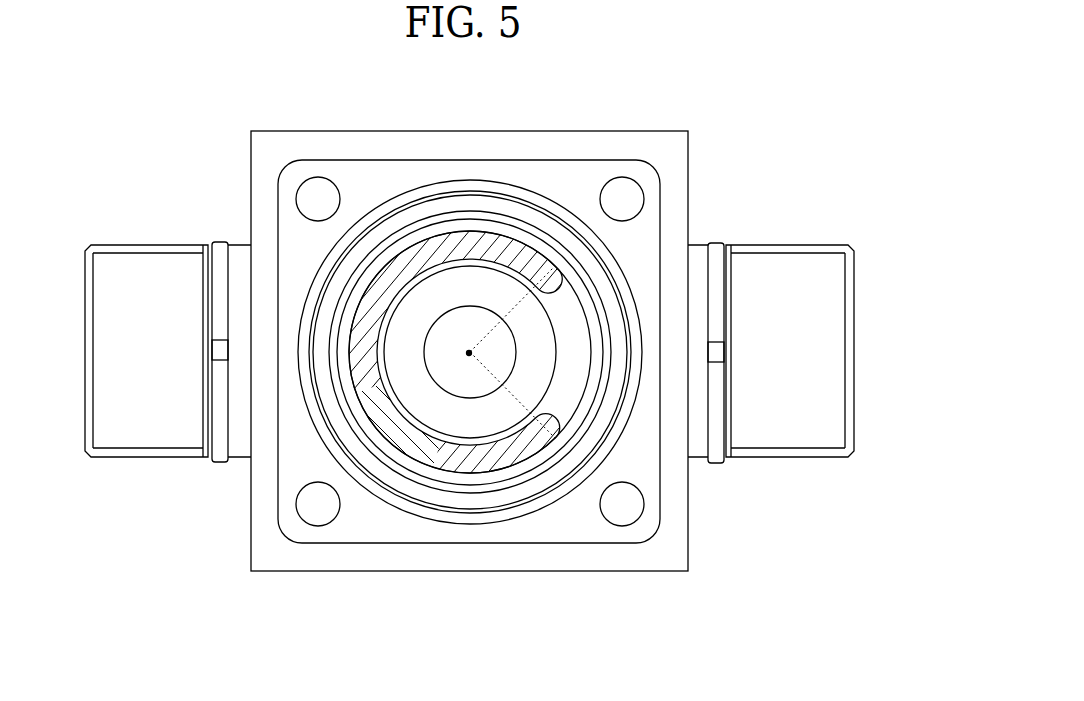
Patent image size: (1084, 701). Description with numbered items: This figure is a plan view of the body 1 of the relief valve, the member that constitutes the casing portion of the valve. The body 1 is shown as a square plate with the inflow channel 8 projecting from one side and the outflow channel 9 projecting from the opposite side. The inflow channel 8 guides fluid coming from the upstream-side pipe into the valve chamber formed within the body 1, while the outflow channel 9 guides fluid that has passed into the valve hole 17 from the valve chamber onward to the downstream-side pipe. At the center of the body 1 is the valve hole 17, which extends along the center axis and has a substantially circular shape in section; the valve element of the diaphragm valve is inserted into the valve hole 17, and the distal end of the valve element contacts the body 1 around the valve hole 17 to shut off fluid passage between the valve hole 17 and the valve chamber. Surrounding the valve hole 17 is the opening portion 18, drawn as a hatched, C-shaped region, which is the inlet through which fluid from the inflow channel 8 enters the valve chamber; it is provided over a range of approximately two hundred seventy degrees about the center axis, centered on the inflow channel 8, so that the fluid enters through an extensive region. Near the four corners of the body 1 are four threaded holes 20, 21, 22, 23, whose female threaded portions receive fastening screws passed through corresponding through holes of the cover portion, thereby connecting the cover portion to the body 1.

The body 1 is at (672, 147).
The inflow channel 8 is at (156, 273).
The outflow channel 9 is at (823, 385).
The valve hole 17 is at (468, 380).
The opening portion 18 is at (468, 240).
The threaded hole 20 is at (632, 199).
The threaded hole 21 is at (625, 505).
The threaded hole 22 is at (303, 500).
The threaded hole 23 is at (319, 190).